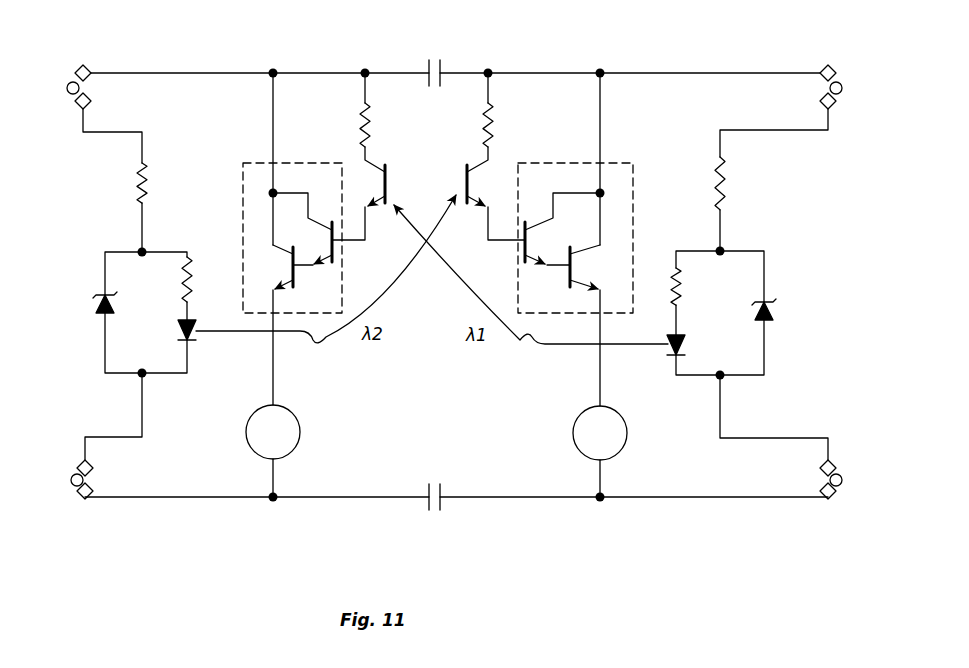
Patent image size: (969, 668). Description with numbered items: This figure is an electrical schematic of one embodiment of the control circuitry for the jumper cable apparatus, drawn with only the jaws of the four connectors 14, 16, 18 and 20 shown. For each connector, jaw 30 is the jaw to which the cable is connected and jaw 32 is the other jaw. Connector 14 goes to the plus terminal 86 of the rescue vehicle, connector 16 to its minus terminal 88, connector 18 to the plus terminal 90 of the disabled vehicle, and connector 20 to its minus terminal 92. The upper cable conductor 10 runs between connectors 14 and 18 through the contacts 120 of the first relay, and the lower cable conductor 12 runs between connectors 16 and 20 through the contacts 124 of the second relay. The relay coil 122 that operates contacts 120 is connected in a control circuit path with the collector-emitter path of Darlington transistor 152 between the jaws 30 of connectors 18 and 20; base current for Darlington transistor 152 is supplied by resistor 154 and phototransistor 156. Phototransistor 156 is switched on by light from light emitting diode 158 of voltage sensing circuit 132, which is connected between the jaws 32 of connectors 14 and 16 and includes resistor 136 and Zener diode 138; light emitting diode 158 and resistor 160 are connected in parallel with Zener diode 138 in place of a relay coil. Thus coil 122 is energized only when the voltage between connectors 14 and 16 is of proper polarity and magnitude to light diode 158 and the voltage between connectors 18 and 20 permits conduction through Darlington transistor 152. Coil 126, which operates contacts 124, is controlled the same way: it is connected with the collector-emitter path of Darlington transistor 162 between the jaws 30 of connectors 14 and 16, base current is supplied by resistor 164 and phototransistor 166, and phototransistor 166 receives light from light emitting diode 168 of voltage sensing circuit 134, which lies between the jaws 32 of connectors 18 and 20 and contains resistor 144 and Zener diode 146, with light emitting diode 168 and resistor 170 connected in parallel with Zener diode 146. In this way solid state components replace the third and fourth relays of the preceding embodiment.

The positive supply bus line 10 is at (175, 72).
The negative supply bus line 12 is at (171, 498).
The connector 14 is at (829, 63).
The connector 16 is at (827, 501).
The connector 18 is at (85, 63).
The connector 20 is at (85, 501).
The jaw 30 is at (76, 68).
The jaw 32 is at (76, 103).
The plus terminal 86 is at (844, 88).
The minus terminal 88 is at (844, 480).
The plus terminal 90 is at (66, 87).
The minus terminal 92 is at (70, 480).
The contacts 120 is at (432, 87).
The relay coil 122 is at (294, 417).
The contacts 124 is at (435, 483).
The relay coil 126 is at (578, 418).
The voltage sensing circuit 132 is at (759, 313).
The voltage sensing circuit 134 is at (131, 304).
The resistor 136 is at (726, 185).
The Zener diode 138 is at (772, 312).
The resistor 144 is at (137, 188).
The Zener diode 146 is at (114, 294).
The Darlington transistor 152 is at (307, 160).
The resistor 154 is at (370, 107).
The phototransistor 156 is at (390, 170).
The light emitting diode 158 is at (679, 333).
The resistor 160 is at (681, 277).
The Darlington transistor 162 is at (634, 162).
The resistor 164 is at (493, 113).
The phototransistor 166 is at (466, 166).
The light emitting diode 168 is at (177, 333).
The resistor 170 is at (193, 272).